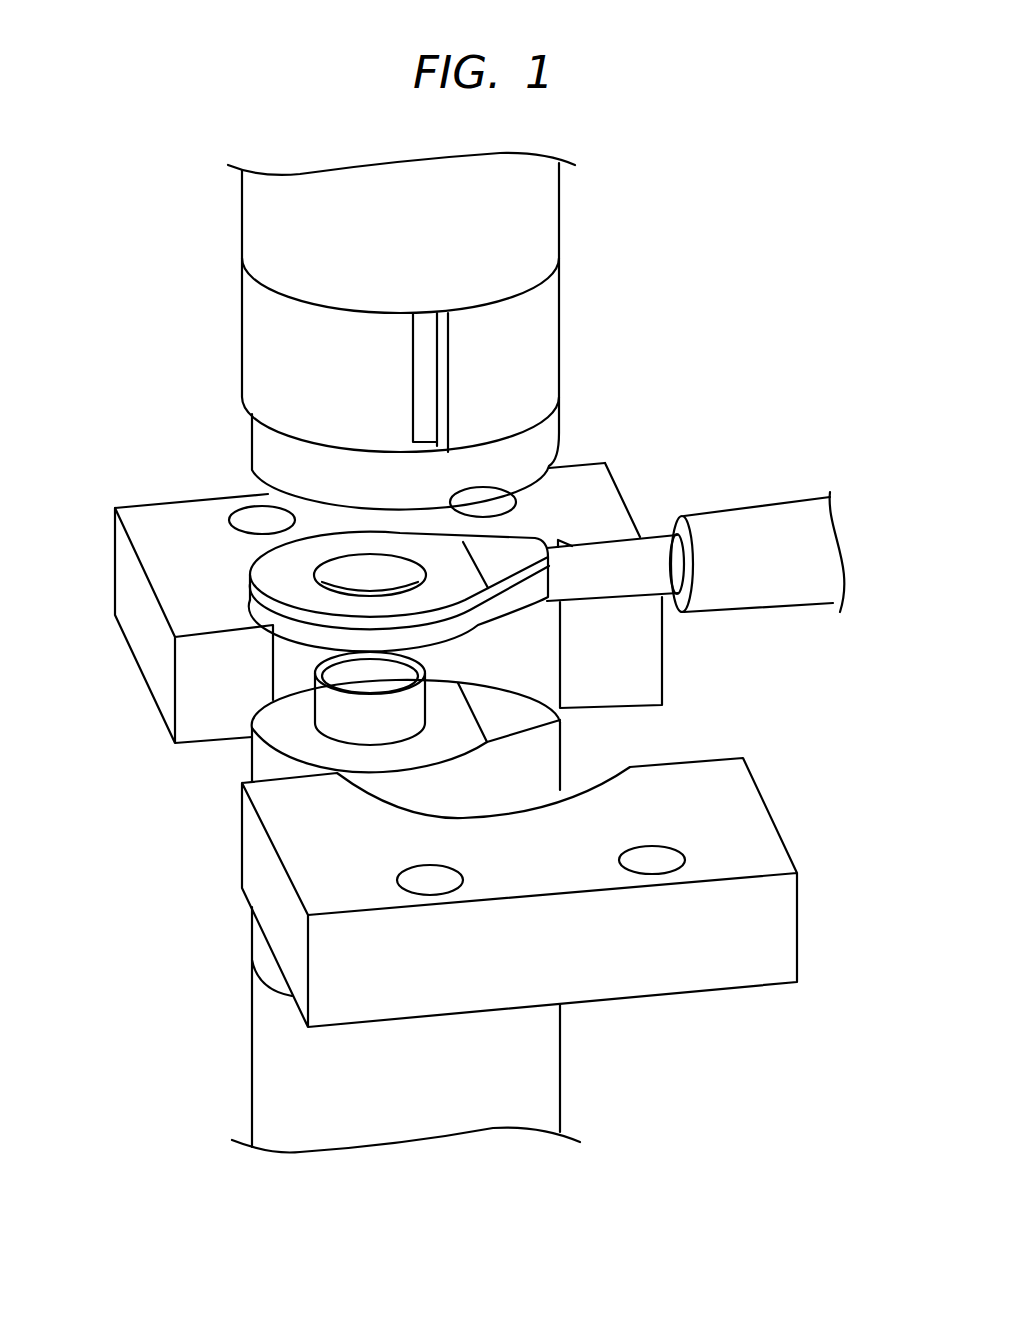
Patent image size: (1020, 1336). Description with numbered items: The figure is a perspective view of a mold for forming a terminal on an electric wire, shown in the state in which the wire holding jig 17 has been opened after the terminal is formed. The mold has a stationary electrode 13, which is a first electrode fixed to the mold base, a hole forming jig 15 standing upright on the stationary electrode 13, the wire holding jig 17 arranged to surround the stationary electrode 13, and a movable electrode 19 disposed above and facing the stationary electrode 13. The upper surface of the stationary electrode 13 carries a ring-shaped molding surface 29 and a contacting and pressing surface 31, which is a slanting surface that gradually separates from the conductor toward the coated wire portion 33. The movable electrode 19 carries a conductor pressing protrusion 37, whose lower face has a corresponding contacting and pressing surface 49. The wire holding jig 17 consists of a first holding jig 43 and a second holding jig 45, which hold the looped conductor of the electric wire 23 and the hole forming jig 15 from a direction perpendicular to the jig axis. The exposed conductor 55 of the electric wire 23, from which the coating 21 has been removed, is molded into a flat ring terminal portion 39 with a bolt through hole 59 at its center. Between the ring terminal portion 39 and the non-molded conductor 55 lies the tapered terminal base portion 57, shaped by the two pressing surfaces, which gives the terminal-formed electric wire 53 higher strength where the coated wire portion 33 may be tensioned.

The stationary electrode 13 is at (241, 1059).
The hole forming jig 15 is at (402, 708).
The wire holding jig 17 is at (429, 745).
The movable electrode 19 is at (234, 218).
The coating 21 is at (663, 518).
The electric wire 23 is at (753, 517).
The ring-shaped molding surface 29 is at (277, 730).
The contacting and pressing surface 31 is at (508, 712).
The coated wire portion 33 is at (765, 502).
The conductor pressing protrusion 37 is at (250, 448).
The ring terminal portion 39 is at (282, 573).
The first holding jig 43 is at (152, 663).
The second holding jig 45 is at (469, 892).
The contacting and pressing surface 49 is at (522, 480).
The terminal-formed electric wire 53 is at (485, 528).
The conductor 55 is at (617, 583).
The terminal base portion 57 is at (337, 528).
The bolt through hole 59 is at (358, 568).